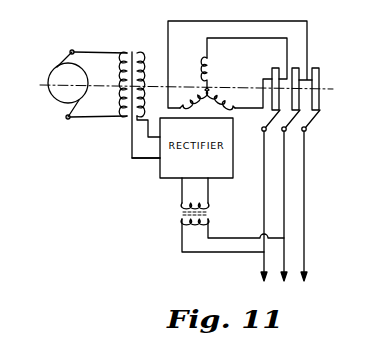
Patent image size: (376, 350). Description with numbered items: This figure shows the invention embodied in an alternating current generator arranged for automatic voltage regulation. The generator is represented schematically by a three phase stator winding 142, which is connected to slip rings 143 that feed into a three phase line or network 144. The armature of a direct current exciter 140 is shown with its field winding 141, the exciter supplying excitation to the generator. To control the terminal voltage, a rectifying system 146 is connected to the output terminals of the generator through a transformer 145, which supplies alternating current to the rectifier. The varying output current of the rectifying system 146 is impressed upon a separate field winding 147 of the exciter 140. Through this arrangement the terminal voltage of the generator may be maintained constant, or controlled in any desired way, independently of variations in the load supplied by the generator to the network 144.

The armature of a direct current exciter 140 is at (54, 92).
The field winding 141 is at (121, 44).
The three phase stator winding 142 is at (242, 78).
The slip rings 143 is at (314, 66).
The three phase line or network 144 is at (284, 228).
The transformer 145 is at (211, 213).
The rectifying system 146 is at (166, 160).
The separate field winding 147 is at (148, 44).